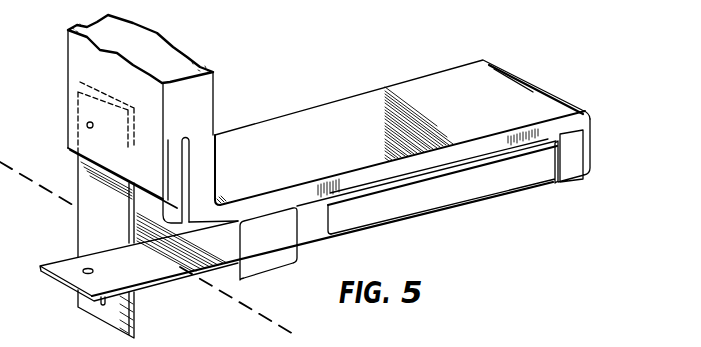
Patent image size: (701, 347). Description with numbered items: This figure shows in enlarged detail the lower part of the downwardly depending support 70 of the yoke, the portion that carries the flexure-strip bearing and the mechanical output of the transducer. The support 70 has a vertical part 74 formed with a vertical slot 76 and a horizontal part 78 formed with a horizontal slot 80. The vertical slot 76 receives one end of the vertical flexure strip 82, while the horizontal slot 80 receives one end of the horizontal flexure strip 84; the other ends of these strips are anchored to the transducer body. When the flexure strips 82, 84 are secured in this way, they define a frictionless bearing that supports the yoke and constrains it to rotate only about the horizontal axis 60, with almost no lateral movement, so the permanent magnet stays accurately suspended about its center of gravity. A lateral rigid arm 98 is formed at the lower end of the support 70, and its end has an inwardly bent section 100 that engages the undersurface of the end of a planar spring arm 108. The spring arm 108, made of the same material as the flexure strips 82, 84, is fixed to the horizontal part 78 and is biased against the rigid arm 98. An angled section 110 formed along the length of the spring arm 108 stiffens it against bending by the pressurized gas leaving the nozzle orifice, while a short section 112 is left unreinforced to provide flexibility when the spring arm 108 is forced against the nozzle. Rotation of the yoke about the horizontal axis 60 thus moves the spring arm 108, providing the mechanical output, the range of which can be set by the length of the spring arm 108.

The horizontal axis 60 is at (248, 314).
The downwardly depending support 70 is at (407, 170).
The vertical part 74 is at (117, 82).
The vertical slot 76 is at (186, 150).
The horizontal part 78 is at (272, 263).
The horizontal slot 80 is at (270, 250).
The vertical flexure strip 82 is at (85, 217).
The horizontal flexure strip 84 is at (70, 259).
The lateral rigid arm 98 is at (460, 107).
The inwardly bent section 100 is at (581, 177).
The spring arm 108 is at (440, 211).
The angled section 110 is at (468, 184).
The short section 112 is at (320, 237).